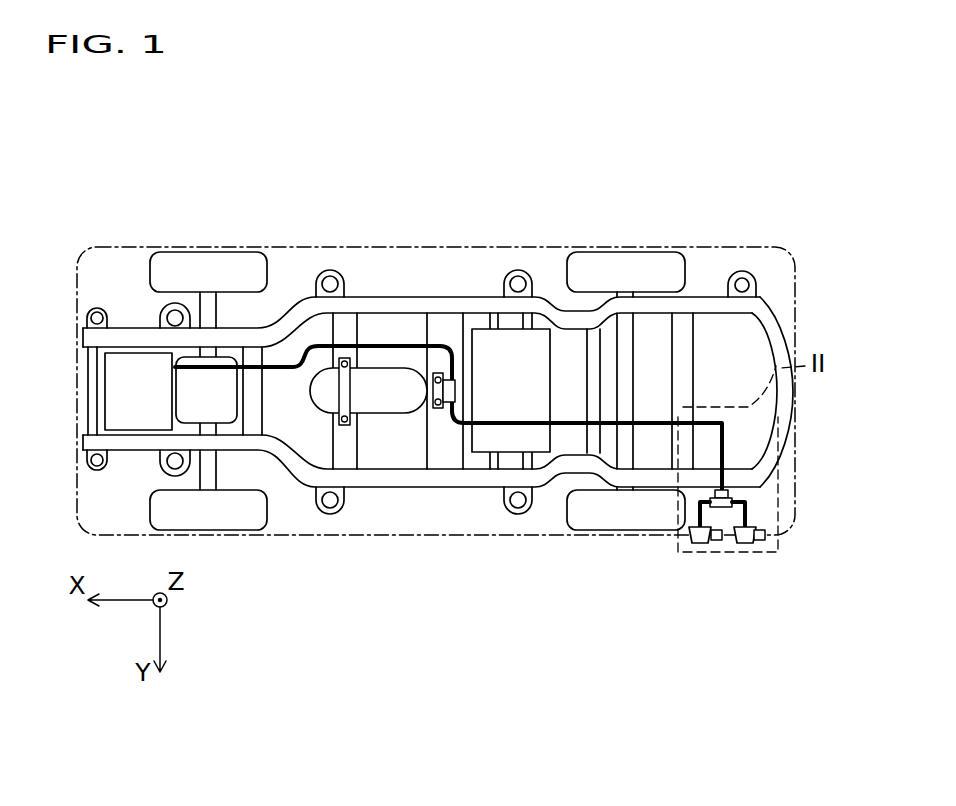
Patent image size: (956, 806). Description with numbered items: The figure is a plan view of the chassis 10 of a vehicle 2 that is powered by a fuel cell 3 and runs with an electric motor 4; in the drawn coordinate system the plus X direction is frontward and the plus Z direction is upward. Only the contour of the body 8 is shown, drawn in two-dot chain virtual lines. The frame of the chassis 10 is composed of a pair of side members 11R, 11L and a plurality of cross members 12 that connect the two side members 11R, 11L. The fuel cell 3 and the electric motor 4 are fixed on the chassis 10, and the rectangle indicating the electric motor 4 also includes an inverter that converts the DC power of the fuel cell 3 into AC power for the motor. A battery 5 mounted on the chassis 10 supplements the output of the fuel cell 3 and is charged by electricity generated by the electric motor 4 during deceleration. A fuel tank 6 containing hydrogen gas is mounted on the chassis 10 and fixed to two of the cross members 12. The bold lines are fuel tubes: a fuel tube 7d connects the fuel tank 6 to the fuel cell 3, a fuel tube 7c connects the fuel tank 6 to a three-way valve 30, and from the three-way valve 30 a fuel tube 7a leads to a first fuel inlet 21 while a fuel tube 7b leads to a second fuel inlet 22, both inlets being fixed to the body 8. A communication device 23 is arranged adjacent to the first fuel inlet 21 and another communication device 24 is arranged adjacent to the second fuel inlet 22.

The vehicle 2 is at (97, 173).
The fuel cell 3 is at (105, 378).
The electric motor 4 is at (223, 360).
The battery 5 is at (541, 340).
The fuel tank 6 is at (401, 372).
The fuel tube 7a is at (685, 518).
The fuel tube 7b is at (745, 522).
The fuel tube 7c is at (725, 440).
The fuel tube 7d is at (373, 340).
The body 8 is at (750, 247).
The chassis 10 is at (788, 296).
The side member 11R is at (127, 333).
The side member 11L is at (133, 448).
The cross member 12 is at (88, 404).
The first fuel inlet 21 is at (698, 544).
The second fuel inlet 22 is at (745, 544).
The communication device 23 is at (717, 541).
The communication device 24 is at (762, 542).
The three-way valve 30 is at (732, 492).